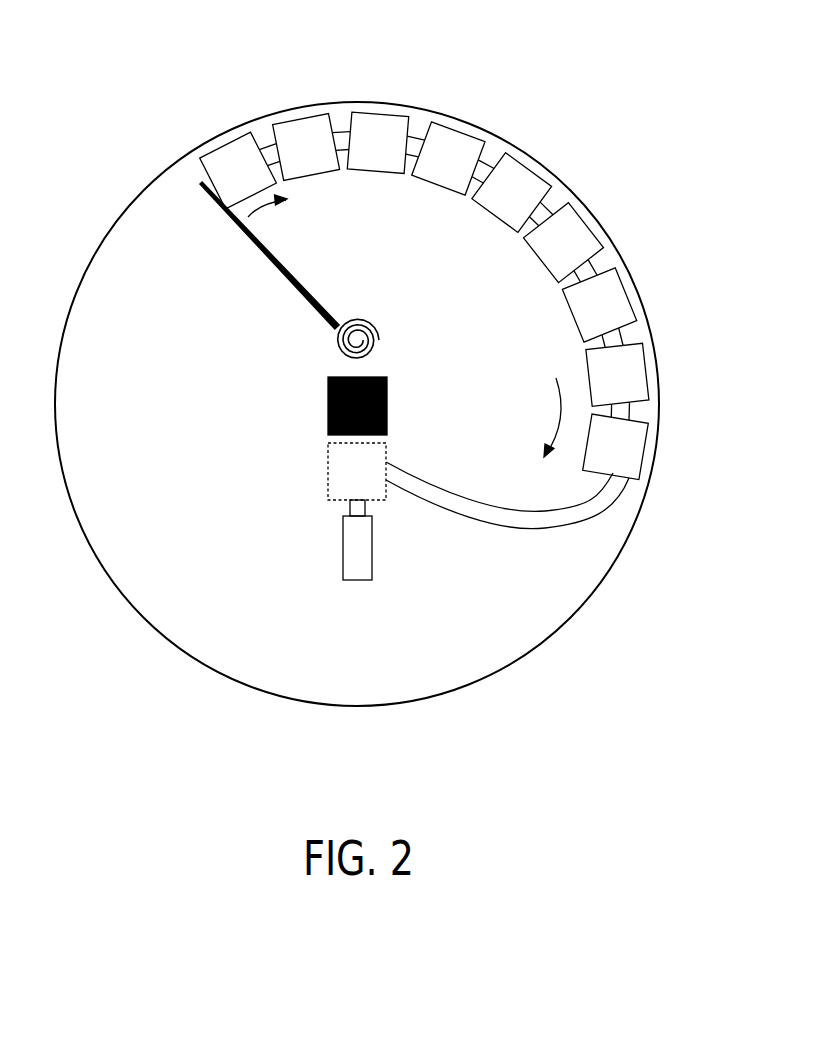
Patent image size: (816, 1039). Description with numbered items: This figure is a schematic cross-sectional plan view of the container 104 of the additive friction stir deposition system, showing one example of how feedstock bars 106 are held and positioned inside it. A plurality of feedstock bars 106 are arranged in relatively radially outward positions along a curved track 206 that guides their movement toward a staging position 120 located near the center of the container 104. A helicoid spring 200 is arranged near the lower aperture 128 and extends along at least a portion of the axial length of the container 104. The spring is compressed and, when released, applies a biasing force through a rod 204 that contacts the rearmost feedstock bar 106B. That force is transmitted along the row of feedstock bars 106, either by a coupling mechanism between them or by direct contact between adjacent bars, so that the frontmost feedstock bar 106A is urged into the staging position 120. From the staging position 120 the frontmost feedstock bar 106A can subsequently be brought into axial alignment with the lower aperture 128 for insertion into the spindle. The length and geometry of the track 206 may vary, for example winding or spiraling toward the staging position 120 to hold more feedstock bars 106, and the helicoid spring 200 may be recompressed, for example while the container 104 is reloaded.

The container 104 is at (359, 44).
The feedstock bars 106 is at (308, 176).
The frontmost feedstock bar 106A is at (643, 452).
The rearmost feedstock bar 106B is at (218, 150).
The staging position 120 is at (298, 474).
The lower aperture 128 is at (405, 408).
The helicoid spring 200 is at (392, 340).
The rod 204 is at (292, 285).
The track 206 is at (535, 520).